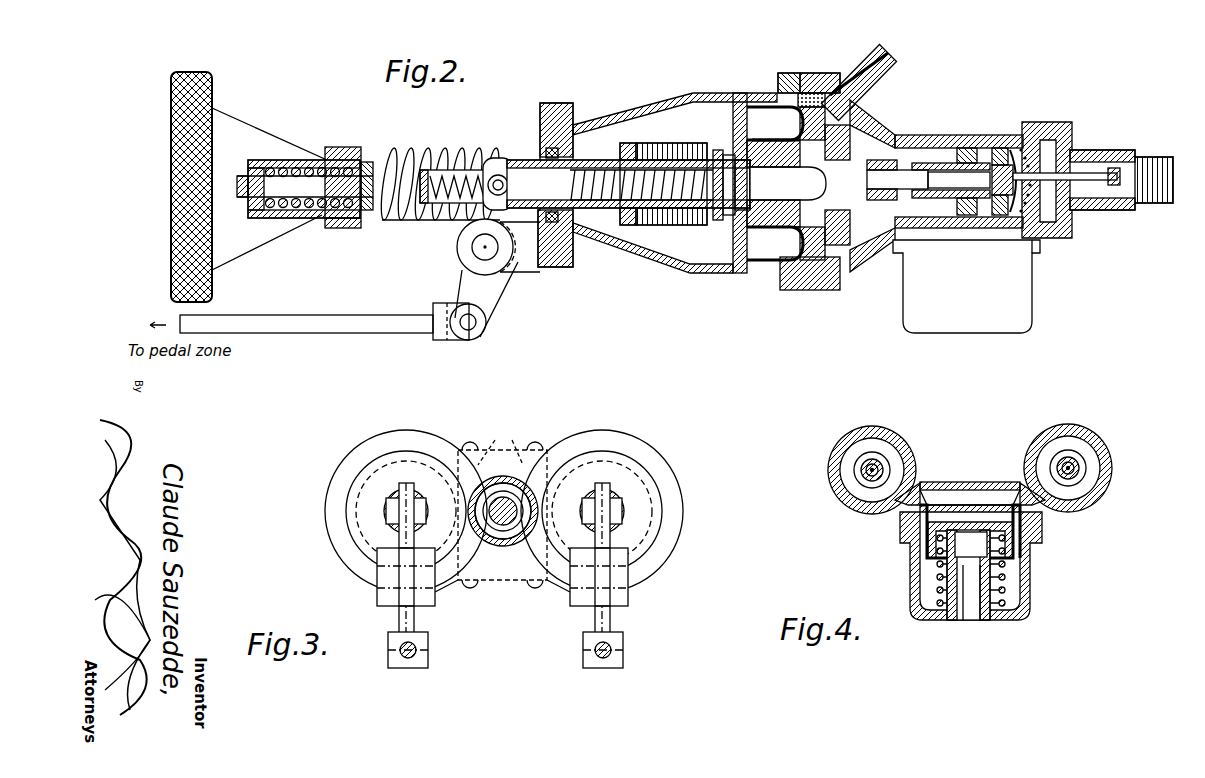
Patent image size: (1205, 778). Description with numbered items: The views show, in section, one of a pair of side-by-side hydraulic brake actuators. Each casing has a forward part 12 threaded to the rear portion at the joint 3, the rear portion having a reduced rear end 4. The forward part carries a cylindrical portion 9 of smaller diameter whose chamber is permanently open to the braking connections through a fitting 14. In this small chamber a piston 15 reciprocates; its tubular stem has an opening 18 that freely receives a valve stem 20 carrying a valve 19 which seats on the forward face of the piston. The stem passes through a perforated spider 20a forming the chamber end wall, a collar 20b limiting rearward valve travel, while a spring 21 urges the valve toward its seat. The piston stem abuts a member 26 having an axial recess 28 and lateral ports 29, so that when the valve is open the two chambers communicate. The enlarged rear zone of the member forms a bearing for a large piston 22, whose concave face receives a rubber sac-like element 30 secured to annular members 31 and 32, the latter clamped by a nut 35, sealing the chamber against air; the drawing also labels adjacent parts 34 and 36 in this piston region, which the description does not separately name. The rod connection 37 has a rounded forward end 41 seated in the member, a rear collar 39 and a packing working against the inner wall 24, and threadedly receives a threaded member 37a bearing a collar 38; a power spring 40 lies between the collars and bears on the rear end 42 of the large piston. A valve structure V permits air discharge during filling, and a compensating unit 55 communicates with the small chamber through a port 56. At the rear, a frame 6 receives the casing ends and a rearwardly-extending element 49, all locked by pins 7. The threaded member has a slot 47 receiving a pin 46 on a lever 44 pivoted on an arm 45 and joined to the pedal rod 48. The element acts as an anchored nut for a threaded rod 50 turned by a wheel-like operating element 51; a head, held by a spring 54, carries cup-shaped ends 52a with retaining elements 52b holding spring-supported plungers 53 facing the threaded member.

In FIG. 2, the threaded joint 3 is at (788, 73).
In FIG. 2, the reduced rear end 4 is at (632, 112).
In FIG. 2, the frame 6 is at (550, 103).
In FIG. 3, the frame 6 is at (325, 503).
In FIG. 3, the pins 7 is at (500, 442).
In FIG. 2, the cylindrical portion 9 is at (972, 135).
In FIG. 4, the cylindrical portion 9 is at (840, 500).
In FIG. 2, the forward part of casing 12 is at (805, 73).
In FIG. 2, the fitting 14 is at (1120, 150).
In FIG. 2, the piston 15 is at (983, 215).
In FIG. 4, the piston 15 is at (854, 470).
In FIG. 2, the opening 18 is at (970, 180).
In FIG. 2, the valve 19 is at (1018, 222).
In FIG. 2, the valve stem 20 is at (1090, 173).
In FIG. 4, the valve stem 20 is at (866, 475).
In FIG. 2, the spider 20a is at (1040, 125).
In FIG. 2, the collar 20b is at (1116, 186).
In FIG. 2, the spring 21 is at (1040, 245).
In FIG. 2, the large piston 22 is at (733, 264).
In FIG. 2, the inner wall 24 is at (786, 140).
In FIG. 2, the member 26 is at (915, 163).
In FIG. 2, the axial recess 28 is at (897, 179).
In FIG. 2, the lateral ports 29 is at (876, 200).
In FIG. 2, the sac-like resilient element 30 is at (775, 183).
In FIG. 2, the annular metallic member 31 is at (820, 92).
In FIG. 2, the annular metallic member 32 is at (848, 150).
In FIG. 2, the bushing 34 is at (812, 140).
In FIG. 2, the nut 35 is at (862, 140).
In FIG. 2, the seal 36 is at (747, 238).
In FIG. 2, the rod connection 37 is at (597, 160).
In FIG. 2, the threaded member 37a is at (490, 158).
In FIG. 3, the threaded member 37a is at (395, 496).
In FIG. 2, the collar 38 is at (626, 143).
In FIG. 2, the rear collar 39 is at (722, 220).
In FIG. 2, the spring 40 is at (670, 143).
In FIG. 2, the forward end 41 is at (788, 183).
In FIG. 2, the rear end of piston 42 is at (707, 150).
In FIG. 2, the lever 44 is at (462, 290).
In FIG. 3, the lever 44 is at (411, 483).
In FIG. 2, the arm 45 is at (510, 273).
In FIG. 3, the arm 45 is at (435, 598).
In FIG. 2, the pin 46 is at (462, 237).
In FIG. 3, the pin 46 is at (420, 511).
In FIG. 2, the slot 47 is at (462, 170).
In FIG. 2, the rod connection 48 is at (310, 327).
In FIG. 3, the rod connection 48 is at (416, 650).
In FIG. 2, the rearwardly-extending element 49 is at (503, 175).
In FIG. 3, the rearwardly-extending element 49 is at (495, 535).
In FIG. 2, the threaded rod 50 is at (416, 150).
In FIG. 3, the threaded rod 50 is at (503, 496).
In FIG. 2, the operating element 51 is at (171, 160).
In FIG. 2, the cup-shaped ends 52a is at (287, 160).
In FIG. 2, the retaining elements 52b is at (350, 150).
In FIG. 2, the plungers 53 is at (358, 228).
In FIG. 2, the spring 54 is at (404, 220).
In FIG. 3, the spring 54 is at (525, 540).
In FIG. 2, the automatic compensating unit 55 is at (897, 250).
In FIG. 4, the automatic compensating unit 55 is at (978, 482).
In FIG. 4, the port 56 is at (925, 487).
In FIG. 2, the valve structure V is at (884, 72).